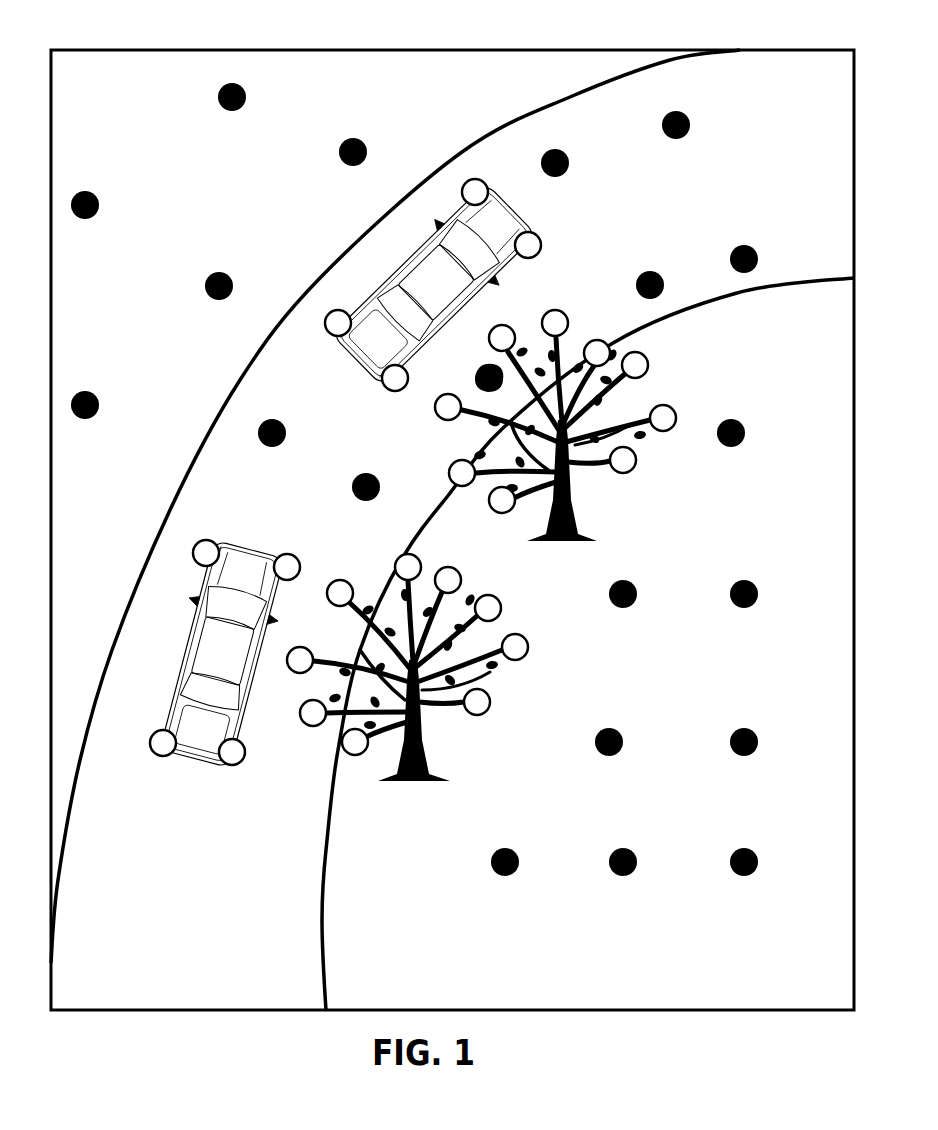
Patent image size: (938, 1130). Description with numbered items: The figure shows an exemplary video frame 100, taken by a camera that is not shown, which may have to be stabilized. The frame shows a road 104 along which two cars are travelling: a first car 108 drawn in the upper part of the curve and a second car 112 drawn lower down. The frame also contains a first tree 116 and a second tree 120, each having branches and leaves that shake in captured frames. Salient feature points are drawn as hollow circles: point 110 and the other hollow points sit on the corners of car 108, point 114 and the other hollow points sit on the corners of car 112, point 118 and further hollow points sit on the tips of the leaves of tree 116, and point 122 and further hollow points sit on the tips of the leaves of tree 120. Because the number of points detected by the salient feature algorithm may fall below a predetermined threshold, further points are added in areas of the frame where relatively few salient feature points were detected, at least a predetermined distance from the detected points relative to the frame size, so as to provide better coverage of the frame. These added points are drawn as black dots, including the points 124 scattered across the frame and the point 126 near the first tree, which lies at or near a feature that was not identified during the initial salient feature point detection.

The frame 100 is at (700, 50).
The road 104 is at (521, 113).
The car 108 is at (525, 218).
The point 110 is at (480, 180).
The car 112 is at (242, 553).
The point 114 is at (208, 540).
The first tree 116 is at (572, 503).
The point 118 is at (562, 311).
The second tree 120 is at (430, 770).
The point 122 is at (452, 566).
The added points 124 is at (364, 146).
The point 126 is at (476, 384).